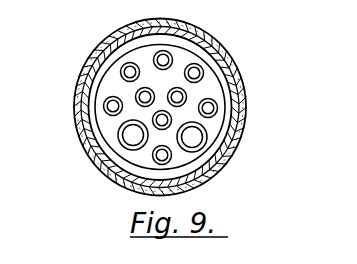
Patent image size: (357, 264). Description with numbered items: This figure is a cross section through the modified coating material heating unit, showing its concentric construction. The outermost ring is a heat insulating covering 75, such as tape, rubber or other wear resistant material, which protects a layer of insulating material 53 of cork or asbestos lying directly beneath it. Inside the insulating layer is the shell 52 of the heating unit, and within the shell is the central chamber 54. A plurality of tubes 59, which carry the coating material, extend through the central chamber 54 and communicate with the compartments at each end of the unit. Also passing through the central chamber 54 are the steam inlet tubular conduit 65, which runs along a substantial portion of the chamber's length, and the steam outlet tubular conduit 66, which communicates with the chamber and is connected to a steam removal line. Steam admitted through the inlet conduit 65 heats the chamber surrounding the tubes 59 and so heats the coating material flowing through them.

The shell 52 is at (238, 138).
The layer of insulating material 53 is at (238, 111).
The central chamber 54 is at (104, 119).
The tubes 59 is at (216, 105).
The steam inlet tubular conduit 65 is at (210, 140).
The steam outlet tubular conduit 66 is at (98, 158).
The heat insulating covering 75 is at (243, 75).